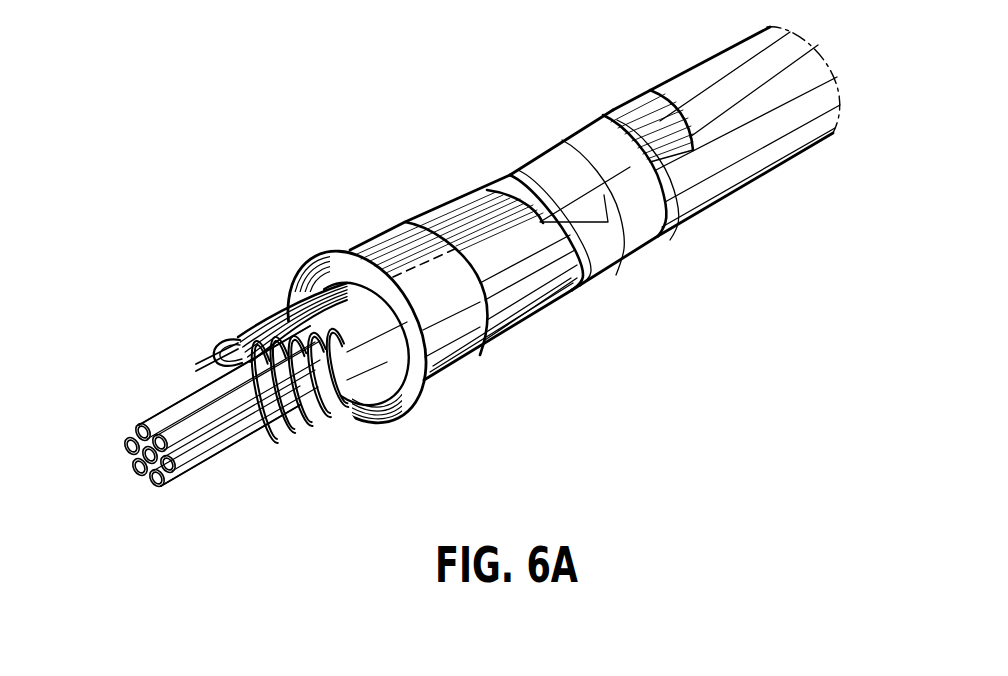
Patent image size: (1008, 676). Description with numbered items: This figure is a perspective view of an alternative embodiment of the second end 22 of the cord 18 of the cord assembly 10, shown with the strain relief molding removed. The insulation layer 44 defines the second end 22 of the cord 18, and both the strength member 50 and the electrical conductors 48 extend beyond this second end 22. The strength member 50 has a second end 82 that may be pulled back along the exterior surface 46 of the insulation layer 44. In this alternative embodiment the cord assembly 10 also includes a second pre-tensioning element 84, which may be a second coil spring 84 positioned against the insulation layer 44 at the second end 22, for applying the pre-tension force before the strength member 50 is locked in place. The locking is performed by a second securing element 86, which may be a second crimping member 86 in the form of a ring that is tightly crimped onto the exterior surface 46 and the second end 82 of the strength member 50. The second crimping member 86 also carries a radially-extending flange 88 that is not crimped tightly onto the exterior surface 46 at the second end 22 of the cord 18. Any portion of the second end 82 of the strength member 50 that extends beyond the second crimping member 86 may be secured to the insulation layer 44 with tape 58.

The cord assembly 10 is at (330, 134).
The cord 18 is at (718, 47).
The second end 22 is at (549, 305).
The insulation layer 44 is at (363, 398).
The exterior surface 46 is at (760, 107).
The electrical conductors 48 is at (133, 461).
The strength member 50 is at (289, 320).
The tape 58 is at (651, 218).
The second end of the strength member 82 is at (640, 100).
The second pre-tensioning element 84 is at (222, 345).
The second securing element 86 is at (407, 240).
The radially-extending flange 88 is at (414, 380).